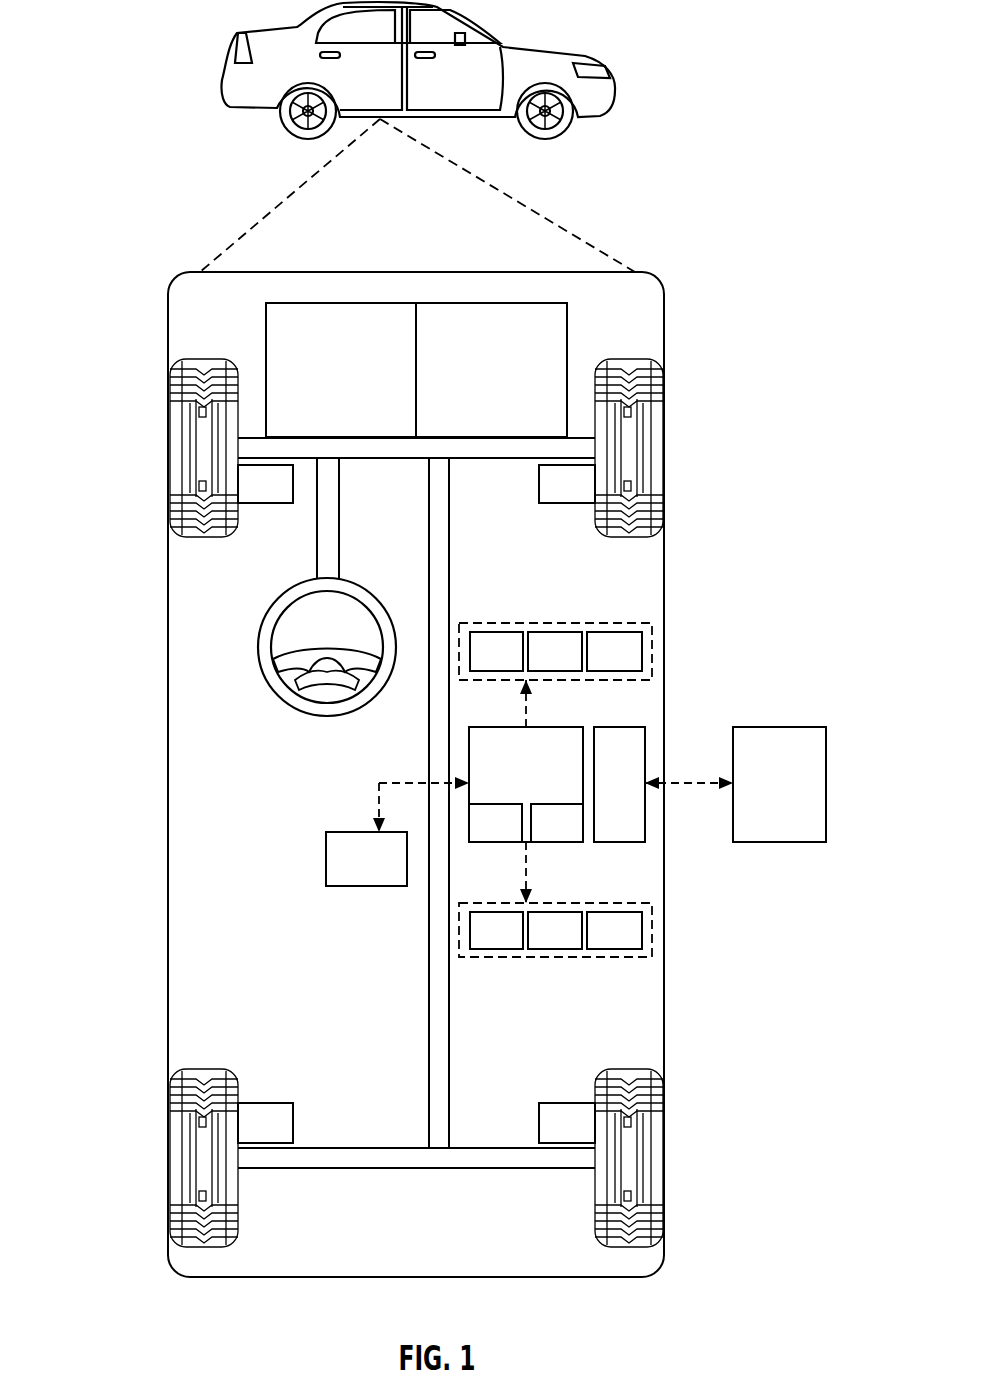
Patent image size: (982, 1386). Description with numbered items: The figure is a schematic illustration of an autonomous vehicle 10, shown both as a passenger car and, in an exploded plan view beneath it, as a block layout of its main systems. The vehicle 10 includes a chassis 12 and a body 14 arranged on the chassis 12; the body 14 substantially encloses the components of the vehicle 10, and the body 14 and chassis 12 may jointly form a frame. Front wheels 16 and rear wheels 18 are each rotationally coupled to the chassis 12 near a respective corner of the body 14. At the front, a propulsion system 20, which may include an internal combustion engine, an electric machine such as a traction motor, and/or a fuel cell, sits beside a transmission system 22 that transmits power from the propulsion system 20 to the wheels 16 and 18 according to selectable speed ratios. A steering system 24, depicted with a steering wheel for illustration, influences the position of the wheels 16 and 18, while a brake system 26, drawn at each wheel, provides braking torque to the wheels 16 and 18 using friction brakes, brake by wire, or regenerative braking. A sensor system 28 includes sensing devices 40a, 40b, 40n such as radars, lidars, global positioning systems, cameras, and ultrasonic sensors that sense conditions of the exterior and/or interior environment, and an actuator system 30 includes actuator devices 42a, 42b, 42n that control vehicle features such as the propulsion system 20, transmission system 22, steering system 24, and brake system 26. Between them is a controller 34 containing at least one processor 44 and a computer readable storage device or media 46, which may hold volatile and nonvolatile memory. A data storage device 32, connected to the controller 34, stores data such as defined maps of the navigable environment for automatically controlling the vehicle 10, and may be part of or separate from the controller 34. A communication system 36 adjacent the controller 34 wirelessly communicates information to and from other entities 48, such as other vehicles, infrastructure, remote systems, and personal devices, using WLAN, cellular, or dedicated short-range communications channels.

The vehicle 10 is at (232, 47).
The chassis 12 is at (428, 1053).
The body 14 is at (167, 860).
The front wheels 16 is at (175, 447).
The rear wheels 18 is at (172, 1158).
The propulsion system 20 is at (327, 388).
The transmission system 22 is at (477, 388).
The steering system 24 is at (341, 486).
The brake system 26 is at (251, 500).
The sensor system 28 is at (555, 632).
The actuator system 30 is at (555, 950).
The data storage device 32 is at (352, 871).
The controller 34 is at (512, 783).
The communication system 36 is at (606, 797).
The sensing device 40a is at (476, 665).
The sensing device 40b is at (535, 665).
The sensing device 40n is at (594, 665).
The actuator device 42a is at (476, 944).
The actuator device 42b is at (535, 944).
The actuator device 42n is at (594, 944).
The processor 44 is at (482, 839).
The computer readable storage device or media 46 is at (544, 839).
The other entities 48 is at (766, 795).